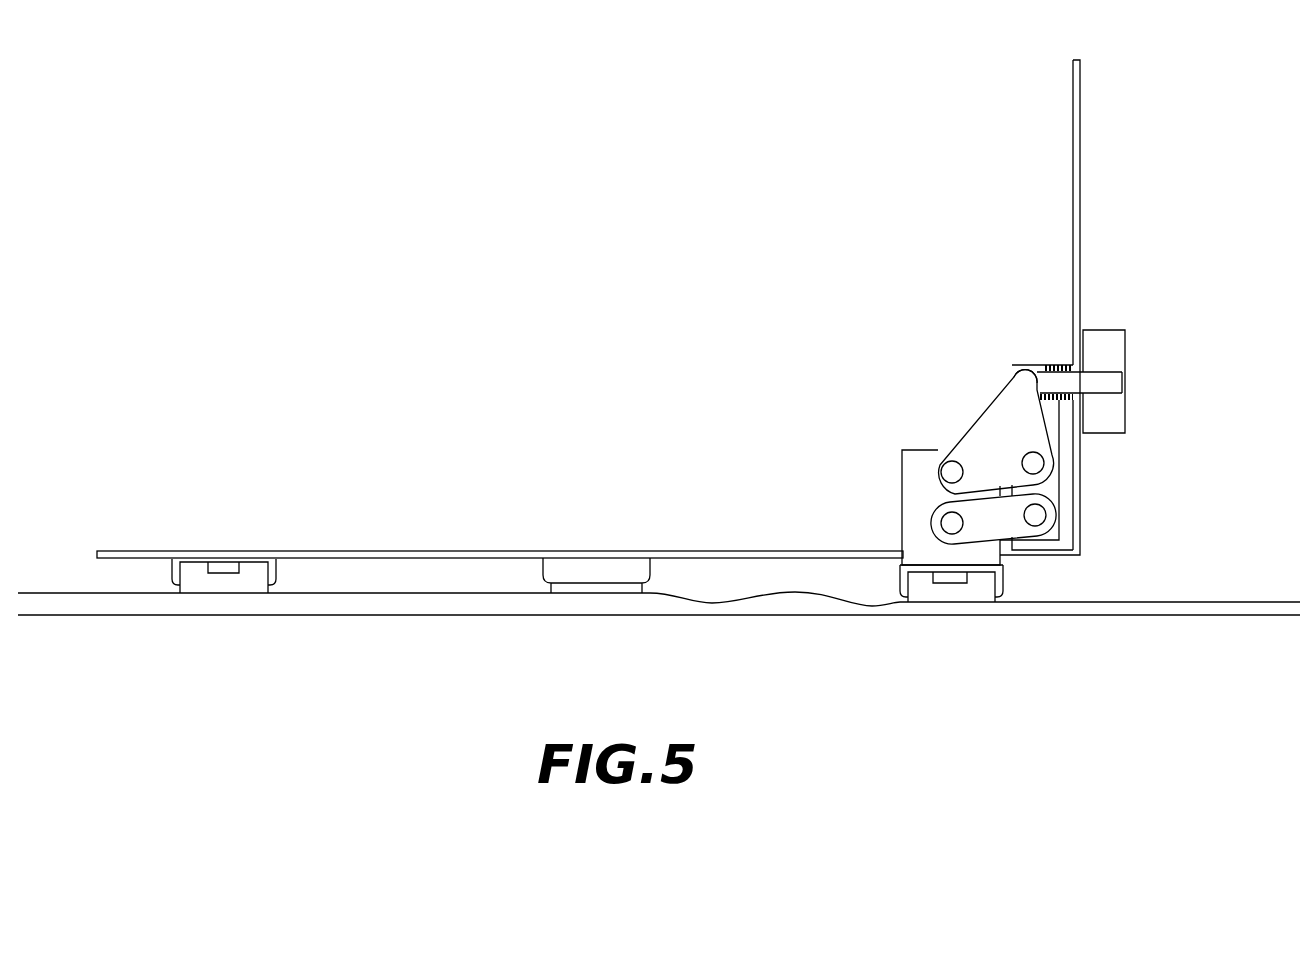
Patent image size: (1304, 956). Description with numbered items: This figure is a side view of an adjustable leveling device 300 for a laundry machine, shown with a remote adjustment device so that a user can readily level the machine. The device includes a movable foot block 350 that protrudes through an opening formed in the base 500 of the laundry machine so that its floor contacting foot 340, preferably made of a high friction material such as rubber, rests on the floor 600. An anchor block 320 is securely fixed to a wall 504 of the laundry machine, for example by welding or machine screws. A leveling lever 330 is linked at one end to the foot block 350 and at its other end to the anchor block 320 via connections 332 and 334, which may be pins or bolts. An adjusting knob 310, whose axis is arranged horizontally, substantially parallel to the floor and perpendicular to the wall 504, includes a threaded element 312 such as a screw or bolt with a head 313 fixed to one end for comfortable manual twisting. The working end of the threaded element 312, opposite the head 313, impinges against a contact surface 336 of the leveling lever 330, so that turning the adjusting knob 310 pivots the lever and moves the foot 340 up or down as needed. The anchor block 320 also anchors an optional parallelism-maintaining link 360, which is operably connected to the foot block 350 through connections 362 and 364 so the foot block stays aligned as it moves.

The adjustable leveling device 300 is at (1273, 371).
The adjusting knob 310 is at (1110, 328).
The threaded element 312 is at (1062, 362).
The head 313 is at (1108, 383).
The anchor block 320 is at (1056, 428).
The leveling lever 330 is at (987, 382).
The connection 332 is at (950, 468).
The connection 334 is at (1028, 458).
The contact surface 336 is at (1025, 362).
The floor contacting foot 340 is at (247, 582).
The foot block 350 is at (900, 527).
The parallelism-maintaining link 360 is at (930, 505).
The connection 362 is at (950, 525).
The connection 364 is at (1046, 514).
The base 500 is at (470, 546).
The wall 504 is at (1072, 213).
The floor 600 is at (392, 590).